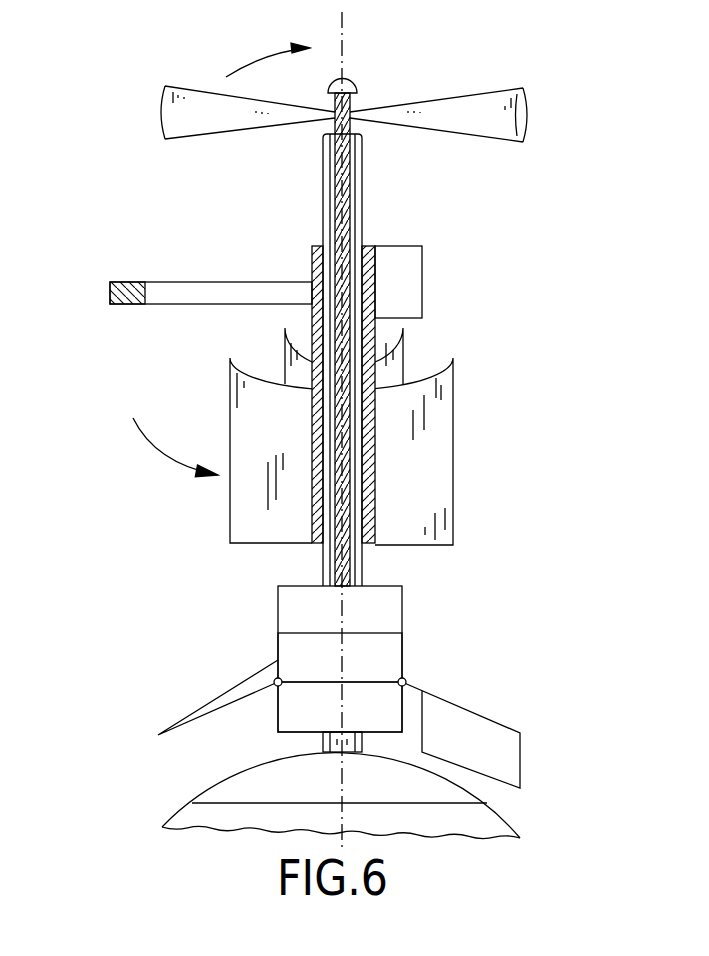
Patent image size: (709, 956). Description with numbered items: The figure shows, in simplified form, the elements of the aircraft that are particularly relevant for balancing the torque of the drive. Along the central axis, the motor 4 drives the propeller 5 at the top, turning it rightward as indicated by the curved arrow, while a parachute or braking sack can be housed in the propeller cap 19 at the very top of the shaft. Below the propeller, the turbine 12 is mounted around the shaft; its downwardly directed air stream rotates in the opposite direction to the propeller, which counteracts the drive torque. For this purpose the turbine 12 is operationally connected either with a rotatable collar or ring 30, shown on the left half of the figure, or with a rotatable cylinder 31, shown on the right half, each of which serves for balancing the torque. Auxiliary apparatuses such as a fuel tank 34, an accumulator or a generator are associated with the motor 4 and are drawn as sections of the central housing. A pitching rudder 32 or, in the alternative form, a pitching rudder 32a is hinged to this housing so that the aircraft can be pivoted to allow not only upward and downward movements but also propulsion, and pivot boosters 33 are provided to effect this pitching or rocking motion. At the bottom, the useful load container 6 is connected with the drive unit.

The propeller 5 is at (175, 113).
The propeller cap 19 is at (350, 85).
The rotatable collar or ring 30 is at (163, 288).
The rotatable cylinder 31 is at (404, 270).
The turbine 12 is at (435, 455).
The motor 4 is at (293, 604).
The fuel tank 34 is at (293, 652).
The pivot boosters 33 is at (288, 713).
The pitching rudder 32 is at (217, 688).
The pitching rudder 32a is at (473, 723).
The useful load container 6 is at (323, 797).